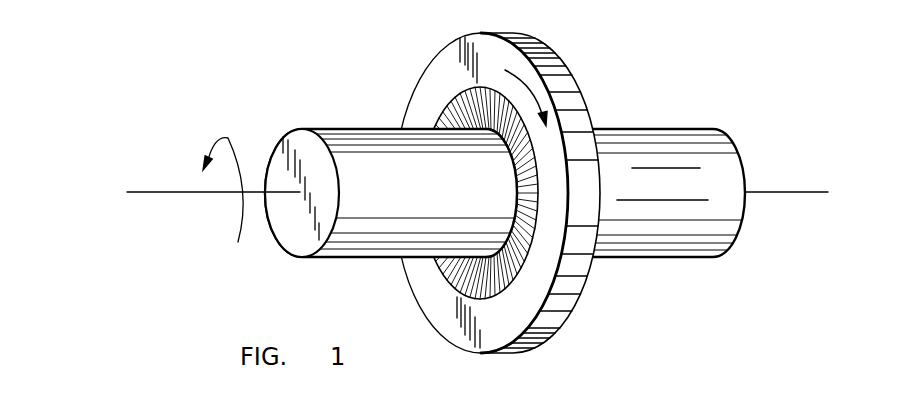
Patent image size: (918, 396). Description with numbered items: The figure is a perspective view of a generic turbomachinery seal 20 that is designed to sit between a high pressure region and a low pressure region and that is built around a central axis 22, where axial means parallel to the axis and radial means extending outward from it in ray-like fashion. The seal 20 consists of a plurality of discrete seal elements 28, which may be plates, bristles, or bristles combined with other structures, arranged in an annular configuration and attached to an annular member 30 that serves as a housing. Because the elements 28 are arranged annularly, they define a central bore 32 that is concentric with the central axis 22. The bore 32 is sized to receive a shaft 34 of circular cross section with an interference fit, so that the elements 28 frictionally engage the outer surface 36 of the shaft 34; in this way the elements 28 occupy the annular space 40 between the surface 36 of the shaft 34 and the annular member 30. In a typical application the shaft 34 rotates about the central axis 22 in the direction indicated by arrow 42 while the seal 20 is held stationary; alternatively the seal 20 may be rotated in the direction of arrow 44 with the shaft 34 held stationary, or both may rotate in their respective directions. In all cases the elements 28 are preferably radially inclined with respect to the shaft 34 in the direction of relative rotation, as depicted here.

The turbomachinery seal 20 is at (370, 63).
The central axis 22 is at (786, 192).
The seal elements 28 is at (484, 88).
The annular member 30 is at (532, 63).
The central bore 32 is at (516, 183).
The shaft 34 is at (287, 238).
The outer surface 36 is at (415, 208).
The annular space 40 is at (445, 109).
The arrow 42 is at (230, 138).
The arrow 44 is at (538, 78).